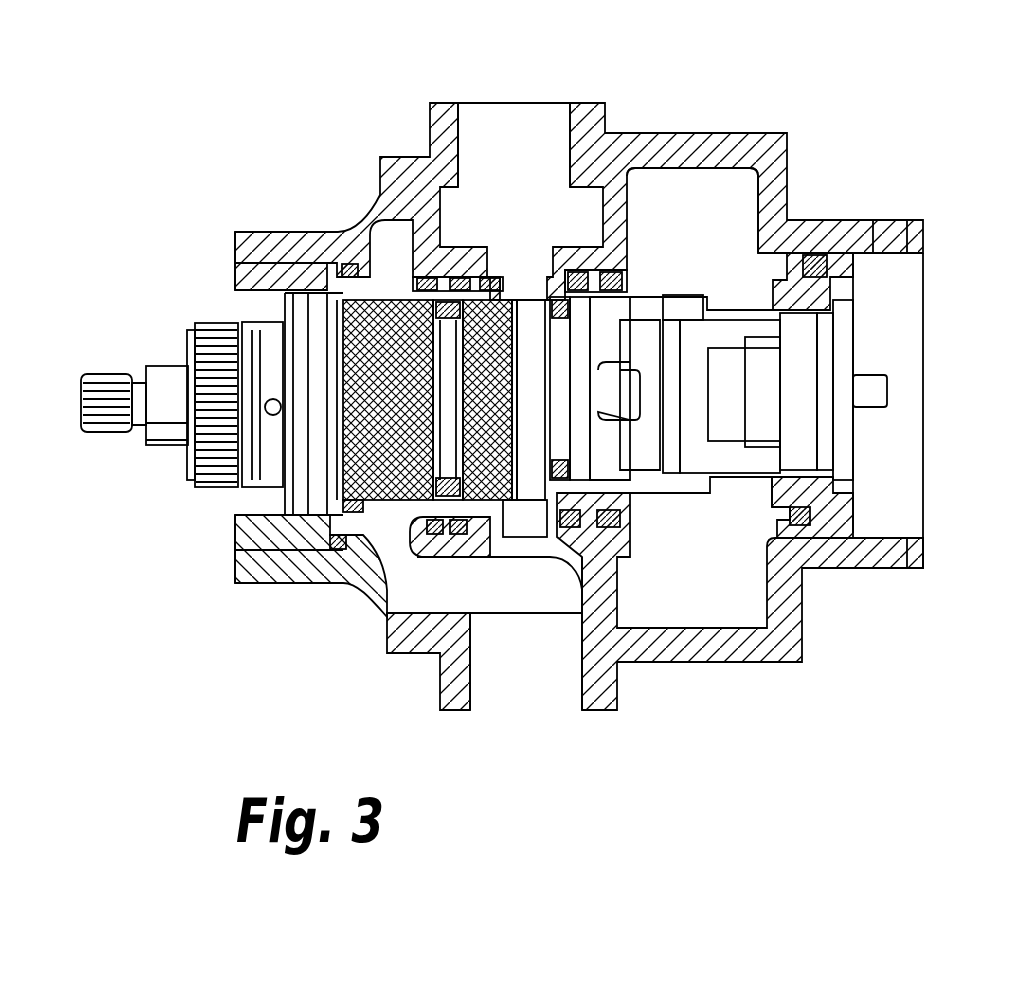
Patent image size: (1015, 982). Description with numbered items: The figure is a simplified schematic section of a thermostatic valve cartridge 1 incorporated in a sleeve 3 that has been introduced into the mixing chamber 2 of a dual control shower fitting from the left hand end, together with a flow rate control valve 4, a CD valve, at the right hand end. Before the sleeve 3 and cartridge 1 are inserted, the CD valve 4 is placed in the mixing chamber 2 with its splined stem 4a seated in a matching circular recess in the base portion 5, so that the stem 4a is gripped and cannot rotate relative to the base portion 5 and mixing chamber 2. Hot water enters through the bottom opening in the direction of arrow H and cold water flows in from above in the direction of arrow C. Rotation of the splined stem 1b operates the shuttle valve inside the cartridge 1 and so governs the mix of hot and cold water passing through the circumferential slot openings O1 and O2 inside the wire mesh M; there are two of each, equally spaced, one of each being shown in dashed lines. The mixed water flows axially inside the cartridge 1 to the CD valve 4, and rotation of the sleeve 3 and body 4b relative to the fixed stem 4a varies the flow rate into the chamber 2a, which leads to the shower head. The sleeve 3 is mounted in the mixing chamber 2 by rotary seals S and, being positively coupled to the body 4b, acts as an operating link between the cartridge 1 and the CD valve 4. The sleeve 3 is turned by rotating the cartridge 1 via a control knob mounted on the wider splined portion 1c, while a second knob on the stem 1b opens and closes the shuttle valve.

The thermostatic valve cartridge 1 is at (387, 513).
The splined stem 1b is at (107, 433).
The splined portion 1c is at (207, 340).
The mixing chamber 2 is at (648, 122).
The chamber 2a is at (737, 197).
The sleeve 3 is at (257, 270).
The flow rate control valve 4 is at (750, 485).
The splined stem 4a is at (870, 387).
The body 4b is at (883, 540).
The base portion 5 is at (907, 460).
The wire mesh M is at (373, 305).
The rotary seals S is at (822, 265).
The slot openings O1 is at (345, 475).
The slot openings O2 is at (510, 497).
The cold water flow direction arrow C is at (512, 92).
The hot water flow direction arrow H is at (522, 728).